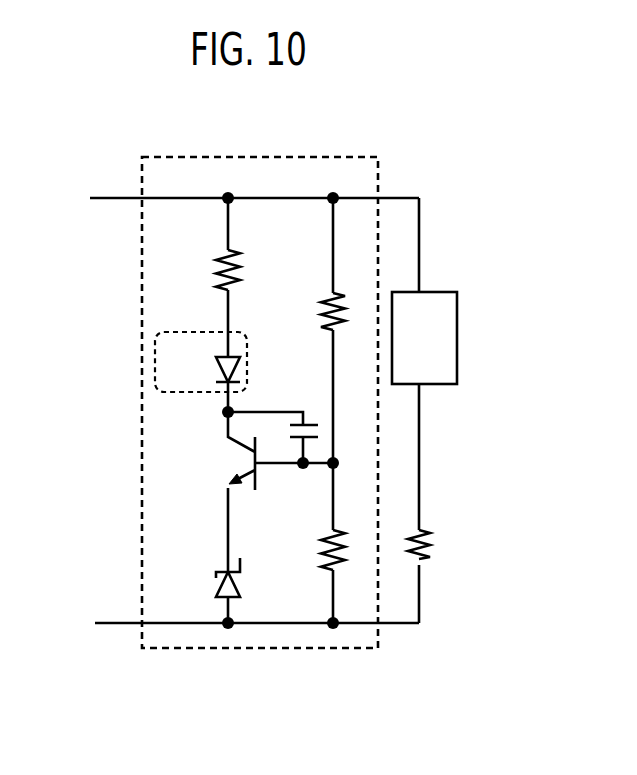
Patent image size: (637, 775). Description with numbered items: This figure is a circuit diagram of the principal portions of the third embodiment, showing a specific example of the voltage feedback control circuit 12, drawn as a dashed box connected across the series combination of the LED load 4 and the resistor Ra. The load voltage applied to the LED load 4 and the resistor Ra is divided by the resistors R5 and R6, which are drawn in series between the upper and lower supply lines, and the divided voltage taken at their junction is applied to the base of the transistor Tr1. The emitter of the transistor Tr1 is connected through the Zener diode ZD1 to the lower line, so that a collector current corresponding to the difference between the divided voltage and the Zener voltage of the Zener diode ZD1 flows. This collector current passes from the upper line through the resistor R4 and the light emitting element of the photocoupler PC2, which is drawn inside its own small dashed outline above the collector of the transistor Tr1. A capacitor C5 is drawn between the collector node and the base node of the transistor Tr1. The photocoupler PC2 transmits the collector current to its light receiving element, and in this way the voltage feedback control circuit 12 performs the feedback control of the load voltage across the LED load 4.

The voltage feedback control circuit 12 is at (140, 457).
The LED load 4 is at (457, 335).
The resistor R4 is at (249, 270).
The resistor R5 is at (312, 311).
The resistor R6 is at (312, 550).
The resistor Ra is at (436, 547).
The photocoupler PC2 is at (201, 346).
The capacitor C5 is at (302, 408).
The transistor Tr1 is at (215, 451).
The Zener diode ZD1 is at (198, 577).